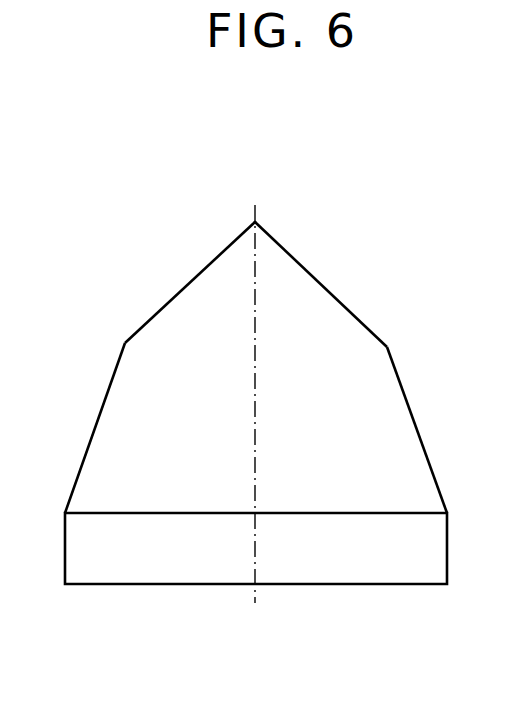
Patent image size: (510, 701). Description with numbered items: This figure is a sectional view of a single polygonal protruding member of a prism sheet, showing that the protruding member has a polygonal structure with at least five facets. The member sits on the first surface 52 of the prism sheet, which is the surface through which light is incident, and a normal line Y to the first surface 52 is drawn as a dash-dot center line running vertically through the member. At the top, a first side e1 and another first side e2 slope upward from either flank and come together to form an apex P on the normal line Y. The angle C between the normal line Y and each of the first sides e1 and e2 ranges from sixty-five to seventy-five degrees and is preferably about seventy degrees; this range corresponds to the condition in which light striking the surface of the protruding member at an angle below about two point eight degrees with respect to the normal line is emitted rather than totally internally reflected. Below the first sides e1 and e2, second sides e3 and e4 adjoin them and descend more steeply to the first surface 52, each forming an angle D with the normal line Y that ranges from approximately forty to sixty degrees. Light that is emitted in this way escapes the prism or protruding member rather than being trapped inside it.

The first surface 52 is at (317, 587).
The first side e1 is at (322, 282).
The first side e2 is at (190, 282).
The second side e3 is at (410, 401).
The second side e4 is at (92, 428).
The apex P is at (270, 212).
The normal line Y is at (253, 387).
The angle C is at (343, 308).
The angle D is at (258, 456).